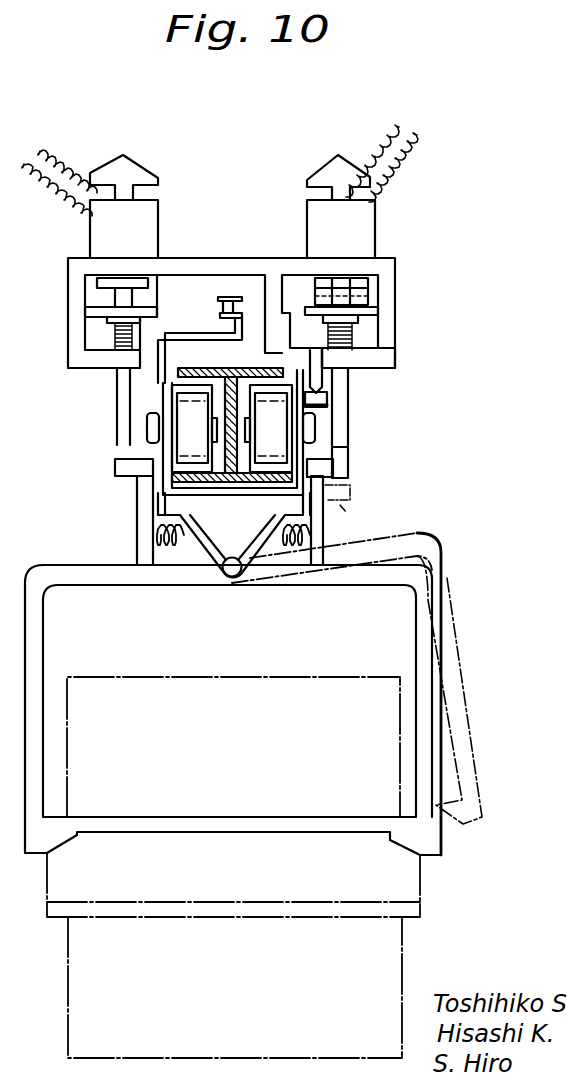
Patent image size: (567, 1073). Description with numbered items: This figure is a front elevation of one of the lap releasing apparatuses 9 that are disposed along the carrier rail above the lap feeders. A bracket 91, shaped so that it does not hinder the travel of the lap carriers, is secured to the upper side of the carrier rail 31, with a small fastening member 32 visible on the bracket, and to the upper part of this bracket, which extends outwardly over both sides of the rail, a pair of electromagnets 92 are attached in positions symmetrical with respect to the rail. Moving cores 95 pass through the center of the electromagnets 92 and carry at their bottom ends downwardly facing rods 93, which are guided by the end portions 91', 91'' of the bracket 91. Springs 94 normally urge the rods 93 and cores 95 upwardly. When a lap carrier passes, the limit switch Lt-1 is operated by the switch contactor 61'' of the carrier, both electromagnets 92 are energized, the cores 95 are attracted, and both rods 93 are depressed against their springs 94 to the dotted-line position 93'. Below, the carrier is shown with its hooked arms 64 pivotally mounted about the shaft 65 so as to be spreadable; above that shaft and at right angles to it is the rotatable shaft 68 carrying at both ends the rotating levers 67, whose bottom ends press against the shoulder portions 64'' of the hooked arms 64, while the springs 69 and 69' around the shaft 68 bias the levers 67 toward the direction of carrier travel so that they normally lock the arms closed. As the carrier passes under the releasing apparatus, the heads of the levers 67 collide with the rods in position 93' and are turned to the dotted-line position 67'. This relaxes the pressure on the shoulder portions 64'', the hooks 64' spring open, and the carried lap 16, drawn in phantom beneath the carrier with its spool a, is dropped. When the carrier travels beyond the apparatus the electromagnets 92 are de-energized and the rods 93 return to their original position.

The lap releasing apparatus 9 is at (64, 257).
The bracket 91 is at (137, 288).
The small screw 32 is at (228, 297).
The moving core 95 is at (323, 172).
The electromagnet 92 is at (367, 228).
The end portion of bracket 91' is at (372, 296).
The spring 94 is at (350, 348).
The end portion of bracket 91'' is at (383, 354).
The limit switch Lt-1 is at (340, 362).
The switch contactor 61'' is at (350, 399).
The carrier rail 31 is at (167, 378).
The rod 93 is at (363, 407).
The depressed position of rod 93' is at (366, 461).
The rotating lever 67 is at (255, 512).
The rotatable shaft 68 is at (320, 550).
The turned position of rotating lever 67' is at (362, 510).
The shaft 65 is at (229, 578).
The spring 69' is at (157, 578).
The spring 69 is at (296, 578).
The hooked arm 64 is at (270, 694).
The shoulder portion 64'' is at (231, 599).
The hook 64' is at (431, 861).
The spool a is at (60, 908).
The base 16 is at (390, 963).